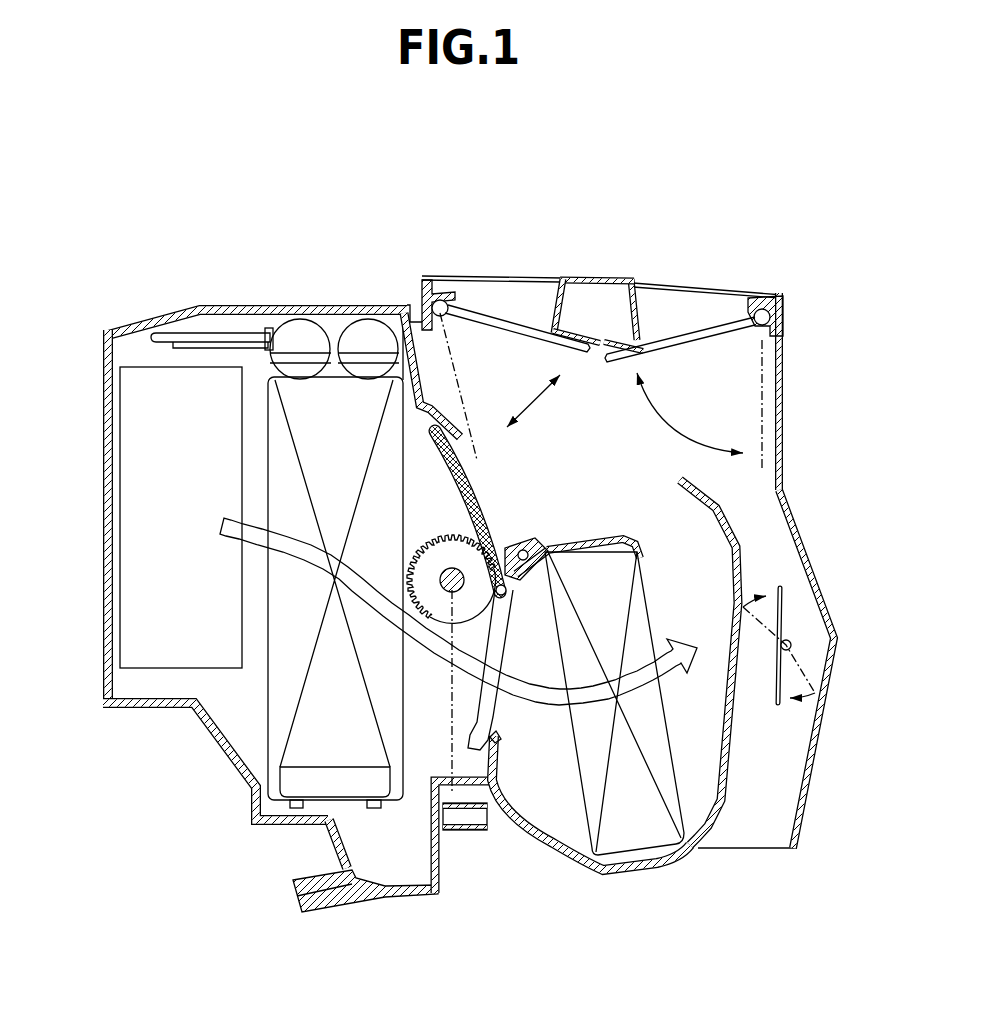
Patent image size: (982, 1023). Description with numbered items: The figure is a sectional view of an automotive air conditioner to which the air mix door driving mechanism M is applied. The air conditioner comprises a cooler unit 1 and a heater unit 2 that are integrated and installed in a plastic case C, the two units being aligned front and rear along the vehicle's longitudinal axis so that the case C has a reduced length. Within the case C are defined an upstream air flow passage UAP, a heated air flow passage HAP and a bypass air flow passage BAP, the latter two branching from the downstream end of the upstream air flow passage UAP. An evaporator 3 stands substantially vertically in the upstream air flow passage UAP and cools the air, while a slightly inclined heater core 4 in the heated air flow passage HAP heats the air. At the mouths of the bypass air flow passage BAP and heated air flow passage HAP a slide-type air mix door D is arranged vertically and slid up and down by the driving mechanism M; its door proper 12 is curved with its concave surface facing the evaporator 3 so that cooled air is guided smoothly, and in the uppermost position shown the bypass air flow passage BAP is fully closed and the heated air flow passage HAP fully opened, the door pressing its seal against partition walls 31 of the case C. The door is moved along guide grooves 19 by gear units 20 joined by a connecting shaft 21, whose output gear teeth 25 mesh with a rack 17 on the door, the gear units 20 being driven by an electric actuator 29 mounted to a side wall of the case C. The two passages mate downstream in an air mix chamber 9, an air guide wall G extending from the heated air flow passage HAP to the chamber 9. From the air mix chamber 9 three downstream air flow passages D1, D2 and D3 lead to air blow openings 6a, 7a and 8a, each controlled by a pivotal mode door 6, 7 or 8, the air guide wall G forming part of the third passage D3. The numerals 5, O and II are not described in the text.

The cooler unit 1 is at (247, 300).
The heater unit 2 is at (601, 268).
The evaporator 3 is at (318, 780).
The heater core 4 is at (652, 838).
The evaporator 5 is at (415, 487).
The mode door 6 is at (480, 317).
The air blow opening 6a is at (543, 277).
The mode door 7 is at (727, 320).
The air blow opening 7a is at (667, 283).
The mode door 8 is at (787, 603).
The air blow opening 8a is at (753, 843).
The air mix chamber 9 is at (632, 461).
The door proper 12 is at (500, 493).
The rack 17 is at (480, 460).
The guide groove 19 is at (480, 708).
The gear unit 20 is at (447, 555).
The connecting shaft 21 is at (457, 590).
The teeth 25 is at (363, 633).
The electric actuator 29 is at (463, 832).
The partition wall 31 is at (455, 430).
The case C is at (148, 325).
The air mix door D is at (484, 462).
The downstream air flow passage D1 is at (507, 297).
The downstream air flow passage D2 is at (692, 307).
The downstream air flow passage D3 is at (763, 532).
The air mix door driving mechanism M is at (410, 553).
The pivot point O is at (497, 737).
The air guide wall G is at (730, 752).
The bypass air flow passage BAP is at (513, 475).
The heated air flow passage HAP is at (537, 715).
The upstream air flow passage UAP is at (253, 472).
The section line II is at (297, 575).